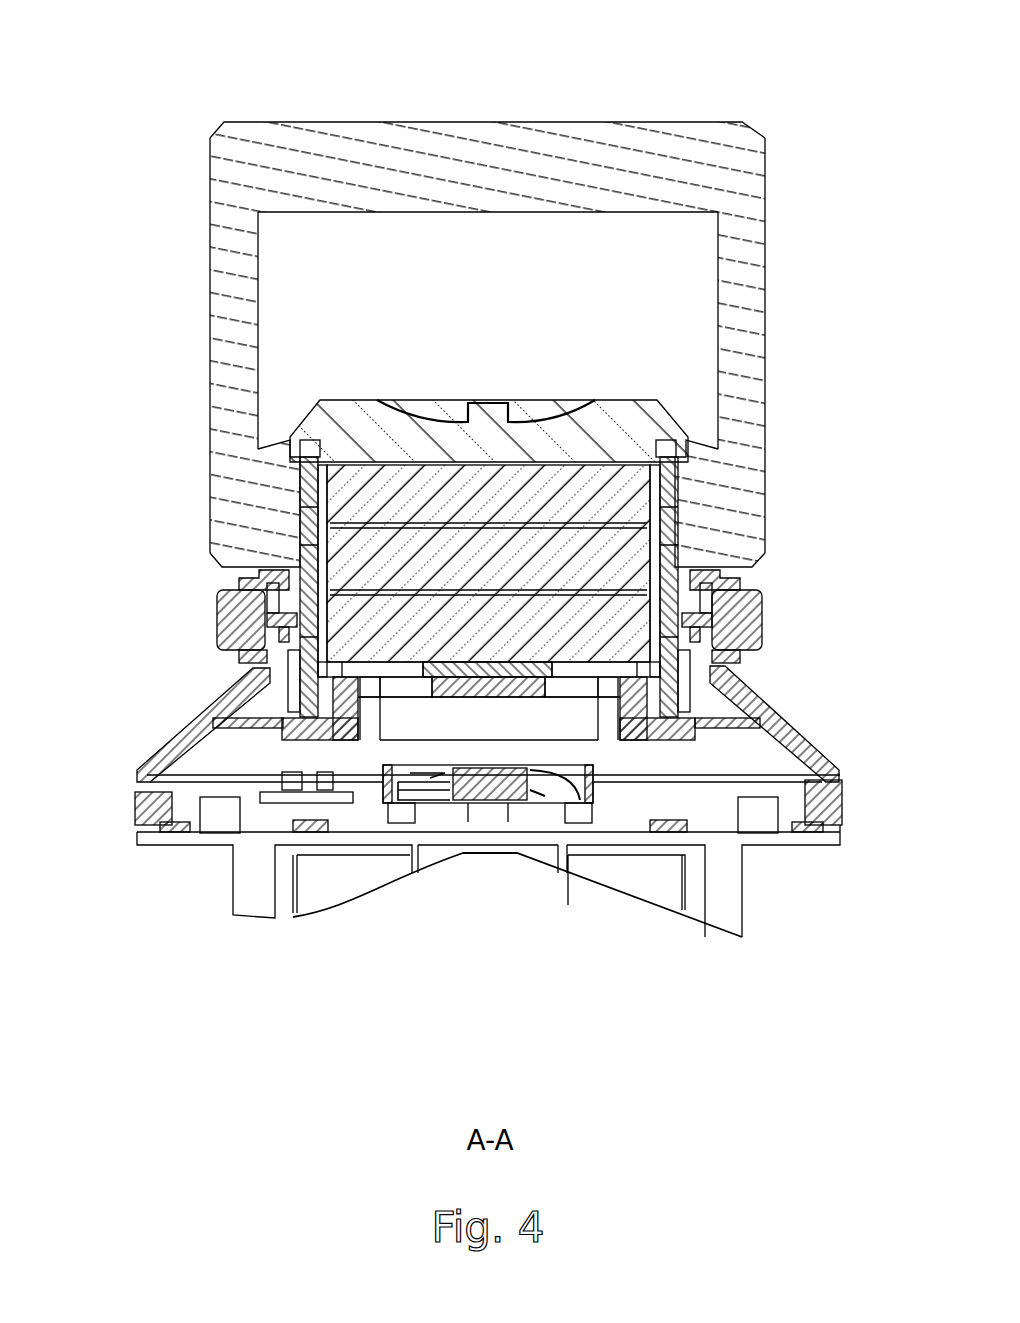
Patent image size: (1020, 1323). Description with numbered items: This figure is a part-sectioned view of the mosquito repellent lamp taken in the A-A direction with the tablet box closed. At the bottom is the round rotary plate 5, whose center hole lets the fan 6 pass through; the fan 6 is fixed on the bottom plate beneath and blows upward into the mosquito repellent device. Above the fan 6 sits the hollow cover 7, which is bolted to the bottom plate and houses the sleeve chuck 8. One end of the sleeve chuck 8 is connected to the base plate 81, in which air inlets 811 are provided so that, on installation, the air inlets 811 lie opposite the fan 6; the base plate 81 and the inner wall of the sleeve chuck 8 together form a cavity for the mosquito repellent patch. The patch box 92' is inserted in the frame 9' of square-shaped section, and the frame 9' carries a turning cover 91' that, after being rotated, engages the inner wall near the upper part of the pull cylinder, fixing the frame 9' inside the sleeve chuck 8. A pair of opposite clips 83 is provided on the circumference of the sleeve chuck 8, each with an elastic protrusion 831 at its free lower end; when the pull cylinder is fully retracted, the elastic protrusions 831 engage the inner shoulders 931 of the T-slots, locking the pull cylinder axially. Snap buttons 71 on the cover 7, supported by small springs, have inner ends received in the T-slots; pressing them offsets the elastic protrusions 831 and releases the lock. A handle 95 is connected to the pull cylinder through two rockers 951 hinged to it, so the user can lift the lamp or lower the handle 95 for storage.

The handle 95 is at (585, 140).
The rockers 951 is at (235, 315).
The turning cover 91' is at (489, 387).
The patch box 92' is at (367, 563).
The frame 9' is at (489, 725).
The clips 83 is at (303, 572).
The elastic protrusions 831 is at (242, 598).
The snap buttons 71 is at (222, 626).
The inner shoulders 931 is at (275, 661).
The cover 7 is at (805, 735).
The sleeve chuck 8 is at (290, 724).
The base plate 81 is at (712, 727).
The air inlets 811 is at (585, 690).
The rotary plate 5 is at (150, 801).
The fan 6 is at (486, 792).